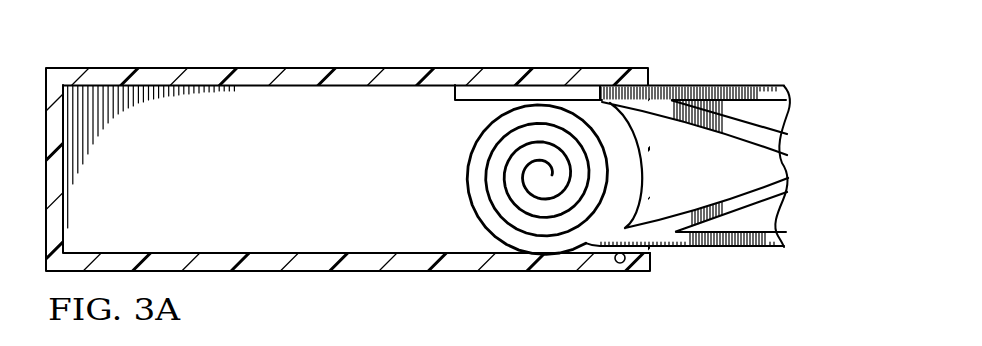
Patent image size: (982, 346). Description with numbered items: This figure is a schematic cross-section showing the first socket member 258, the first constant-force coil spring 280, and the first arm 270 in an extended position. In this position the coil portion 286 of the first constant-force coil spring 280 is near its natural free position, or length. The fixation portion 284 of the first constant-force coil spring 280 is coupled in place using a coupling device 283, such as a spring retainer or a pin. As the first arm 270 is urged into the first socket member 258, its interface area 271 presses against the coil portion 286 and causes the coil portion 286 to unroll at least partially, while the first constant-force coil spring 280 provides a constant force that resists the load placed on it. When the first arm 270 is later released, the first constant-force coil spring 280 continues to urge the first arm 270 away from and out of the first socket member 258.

The first socket member 258 is at (152, 68).
The first arm 270 is at (774, 86).
The interface area 271 is at (638, 171).
The first constant-force coil spring 280 is at (490, 169).
The coupling device 283 is at (621, 263).
The fixation portion 284 is at (605, 253).
The coil portion 286 is at (470, 152).